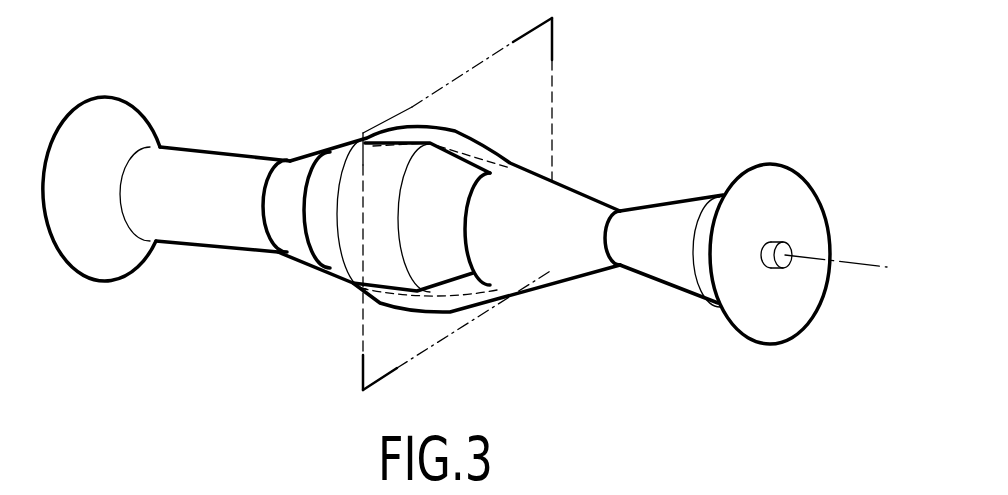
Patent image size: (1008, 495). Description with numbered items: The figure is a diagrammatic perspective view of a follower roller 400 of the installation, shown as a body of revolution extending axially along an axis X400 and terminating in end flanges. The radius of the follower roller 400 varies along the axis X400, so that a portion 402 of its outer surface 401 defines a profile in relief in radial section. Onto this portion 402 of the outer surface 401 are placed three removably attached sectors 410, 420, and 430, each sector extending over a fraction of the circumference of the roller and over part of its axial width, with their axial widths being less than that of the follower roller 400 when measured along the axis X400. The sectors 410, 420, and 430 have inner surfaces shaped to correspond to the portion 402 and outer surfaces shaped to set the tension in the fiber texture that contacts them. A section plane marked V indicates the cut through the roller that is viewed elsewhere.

The follower roller 400 is at (662, 156).
The outer surface 401 is at (305, 166).
The sector 410 is at (376, 166).
The portion of the follower roller 402 is at (423, 138).
The sector 420 is at (486, 143).
The sector 430 is at (400, 300).
The axis of the follower roller X400 is at (867, 262).
The section plane V- V is at (566, 20).